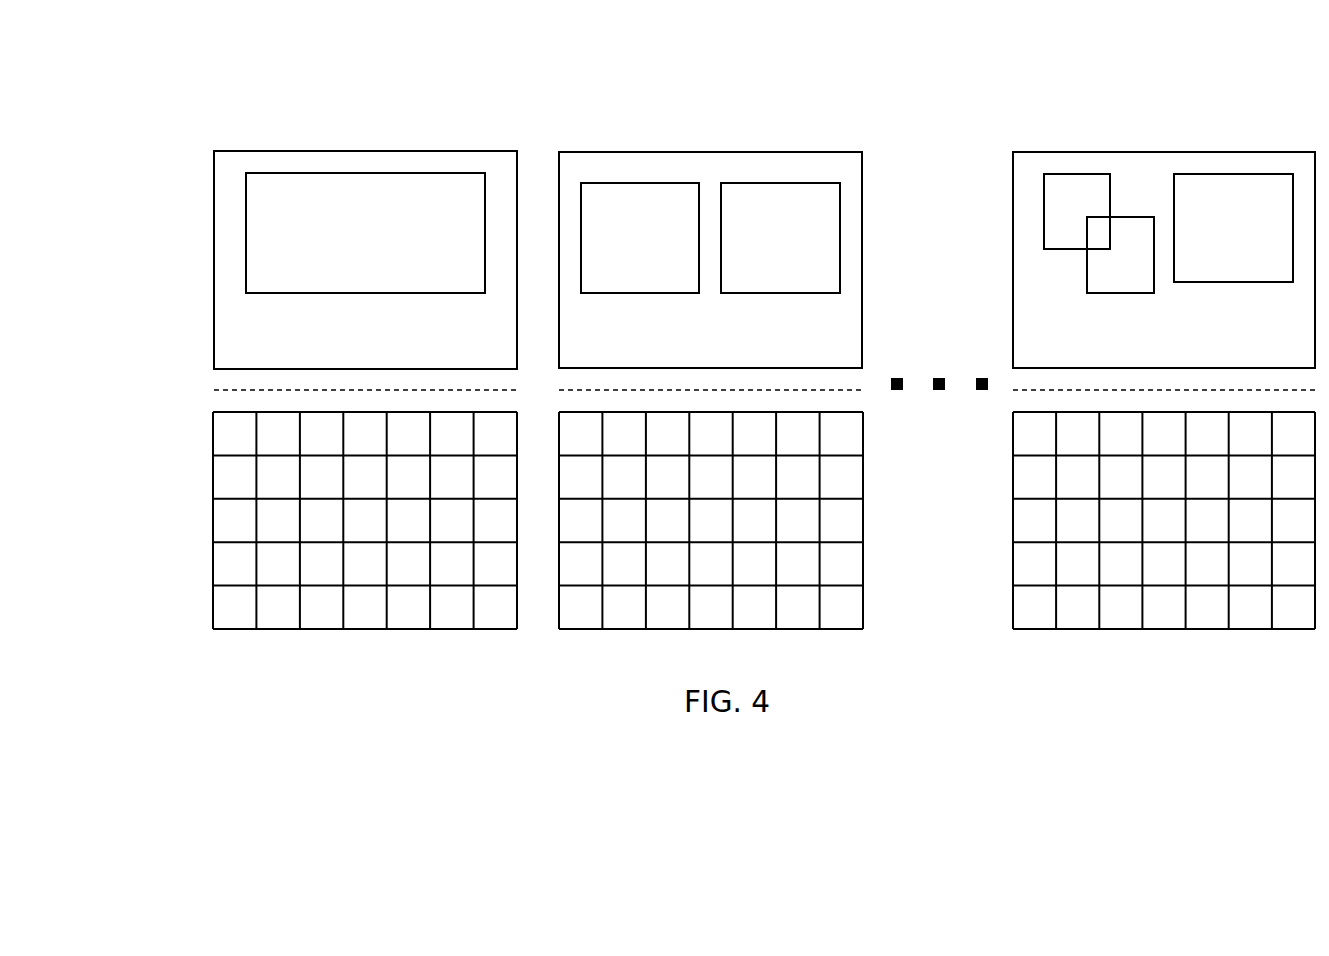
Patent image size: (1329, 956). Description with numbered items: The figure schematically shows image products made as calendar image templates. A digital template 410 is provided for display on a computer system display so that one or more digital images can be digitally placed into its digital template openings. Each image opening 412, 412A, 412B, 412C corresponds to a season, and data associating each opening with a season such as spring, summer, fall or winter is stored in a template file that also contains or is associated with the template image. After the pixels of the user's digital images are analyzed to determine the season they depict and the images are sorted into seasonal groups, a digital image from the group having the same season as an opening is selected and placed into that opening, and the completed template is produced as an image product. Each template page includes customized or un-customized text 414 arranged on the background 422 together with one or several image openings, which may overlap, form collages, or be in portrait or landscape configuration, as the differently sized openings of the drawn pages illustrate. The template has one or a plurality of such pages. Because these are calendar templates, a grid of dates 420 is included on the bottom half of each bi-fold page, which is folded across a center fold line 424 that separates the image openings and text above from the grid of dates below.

The digital template 410 is at (407, 714).
The image opening 412 is at (343, 173).
The image opening 412A is at (658, 183).
The image opening 412B is at (765, 183).
The image opening 412C is at (1131, 217).
The text 414 is at (273, 340).
The grid of dates 420 is at (236, 650).
The background 422 is at (497, 150).
The fold line 424 is at (862, 390).